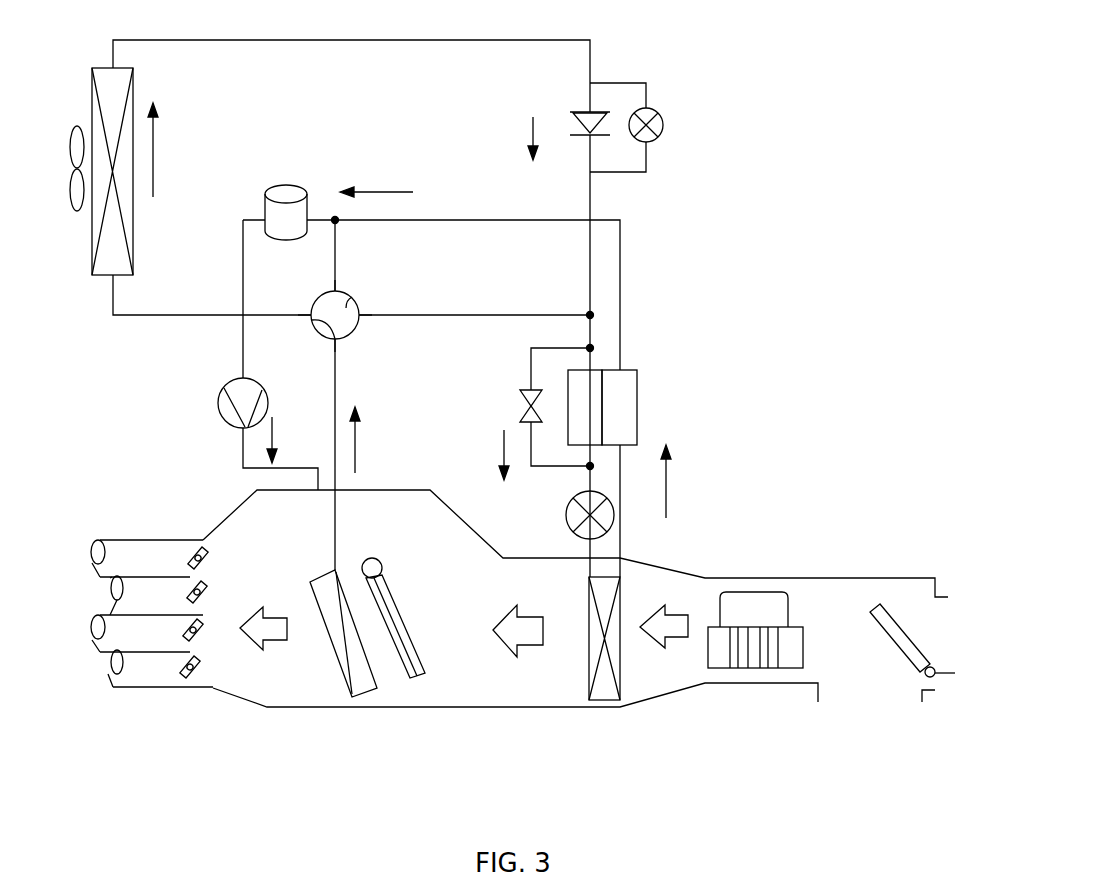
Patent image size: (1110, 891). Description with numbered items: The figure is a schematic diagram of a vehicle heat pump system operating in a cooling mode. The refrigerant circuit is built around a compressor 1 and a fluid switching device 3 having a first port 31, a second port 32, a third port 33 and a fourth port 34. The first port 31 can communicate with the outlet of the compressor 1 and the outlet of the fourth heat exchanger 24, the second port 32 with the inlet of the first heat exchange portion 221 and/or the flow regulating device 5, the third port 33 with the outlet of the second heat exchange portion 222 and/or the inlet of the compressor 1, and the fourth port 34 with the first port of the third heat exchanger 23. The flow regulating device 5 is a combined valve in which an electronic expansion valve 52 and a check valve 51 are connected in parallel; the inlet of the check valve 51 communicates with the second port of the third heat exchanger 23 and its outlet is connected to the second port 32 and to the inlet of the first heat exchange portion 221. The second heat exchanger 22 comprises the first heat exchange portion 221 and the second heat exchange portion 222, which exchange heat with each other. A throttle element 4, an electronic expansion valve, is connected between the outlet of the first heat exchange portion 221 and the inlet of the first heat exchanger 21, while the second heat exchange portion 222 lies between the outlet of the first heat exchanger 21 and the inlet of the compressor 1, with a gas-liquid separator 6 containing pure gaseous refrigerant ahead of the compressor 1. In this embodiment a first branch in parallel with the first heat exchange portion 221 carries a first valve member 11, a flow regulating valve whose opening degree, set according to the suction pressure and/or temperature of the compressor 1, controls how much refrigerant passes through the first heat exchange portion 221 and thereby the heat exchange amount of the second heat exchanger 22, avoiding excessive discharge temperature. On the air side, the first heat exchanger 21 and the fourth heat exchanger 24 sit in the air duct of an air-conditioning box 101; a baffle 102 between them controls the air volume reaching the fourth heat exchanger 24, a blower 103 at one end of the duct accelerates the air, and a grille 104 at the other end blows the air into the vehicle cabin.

The compressor 1 is at (231, 403).
The fluid switching device 3 is at (350, 292).
The first port 31 is at (357, 359).
The second port 32 is at (382, 301).
The third port 33 is at (315, 278).
The fourth port 34 is at (289, 330).
The throttle element 4 is at (570, 515).
The flow regulating device 5 is at (682, 115).
The check valve 51 is at (595, 108).
The electronic expansion valve 52 is at (669, 127).
The gas-liquid separator 6 is at (286, 196).
The first valve member 11 is at (535, 407).
The first heat exchanger 21 is at (625, 638).
The second heat exchanger 22 is at (699, 379).
The first heat exchange portion 221 is at (582, 400).
The second heat exchange portion 222 is at (627, 432).
The third heat exchanger 23 is at (120, 175).
The fourth heat exchanger 24 is at (336, 633).
The air-conditioning box 101 is at (670, 567).
The baffle 102 is at (411, 618).
The blower 103 is at (886, 640).
The grille 104 is at (180, 613).